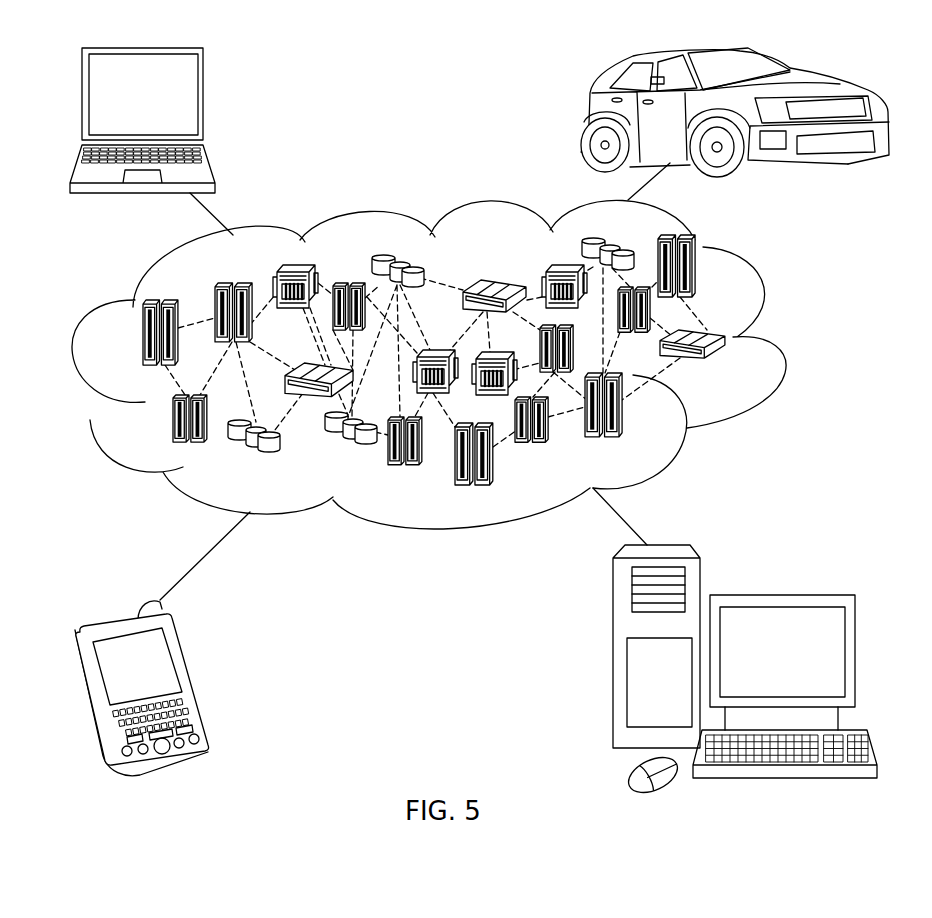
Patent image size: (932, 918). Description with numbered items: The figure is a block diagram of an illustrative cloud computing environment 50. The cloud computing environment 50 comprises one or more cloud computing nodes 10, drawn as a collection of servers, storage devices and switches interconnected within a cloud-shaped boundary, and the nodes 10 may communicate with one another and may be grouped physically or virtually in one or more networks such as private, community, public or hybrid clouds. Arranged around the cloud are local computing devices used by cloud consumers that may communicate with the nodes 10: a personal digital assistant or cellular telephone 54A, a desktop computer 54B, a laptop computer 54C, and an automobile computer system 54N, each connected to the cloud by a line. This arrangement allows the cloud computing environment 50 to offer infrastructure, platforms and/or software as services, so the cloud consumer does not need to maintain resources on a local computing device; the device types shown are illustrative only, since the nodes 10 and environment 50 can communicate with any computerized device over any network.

The laptop computer 54C is at (203, 101).
The automobile computer system 54N is at (592, 113).
The personal digital assistant (PDA) or cellular telephone 54A is at (197, 678).
The desktop computer 54B is at (780, 595).
The cloud computing environment 50 is at (780, 343).
The cloud computing node 10 is at (730, 370).